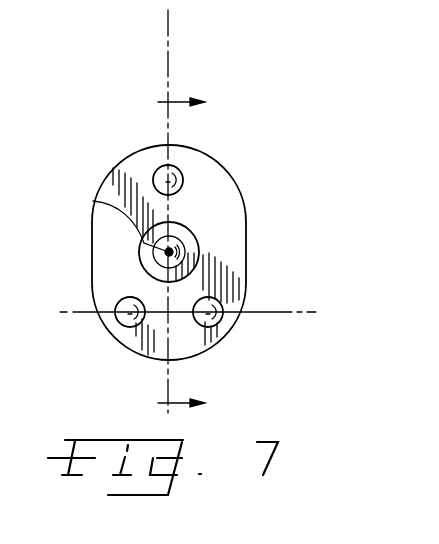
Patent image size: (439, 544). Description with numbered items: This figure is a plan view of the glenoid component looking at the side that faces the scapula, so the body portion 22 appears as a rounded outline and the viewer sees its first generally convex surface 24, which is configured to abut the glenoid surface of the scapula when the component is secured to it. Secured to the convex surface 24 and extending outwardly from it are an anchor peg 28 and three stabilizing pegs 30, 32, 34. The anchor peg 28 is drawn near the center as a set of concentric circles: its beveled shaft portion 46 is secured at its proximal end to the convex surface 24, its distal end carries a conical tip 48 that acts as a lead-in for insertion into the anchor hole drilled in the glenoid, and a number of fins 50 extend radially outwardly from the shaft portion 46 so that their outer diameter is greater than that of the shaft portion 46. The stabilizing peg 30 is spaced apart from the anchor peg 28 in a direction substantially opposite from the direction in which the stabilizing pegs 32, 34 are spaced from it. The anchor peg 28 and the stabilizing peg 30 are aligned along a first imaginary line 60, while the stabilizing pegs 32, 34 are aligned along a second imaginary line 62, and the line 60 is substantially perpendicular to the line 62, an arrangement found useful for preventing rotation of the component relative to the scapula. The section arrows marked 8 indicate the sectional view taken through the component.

The section line 8- 8 is at (192, 254).
The body portion 22 is at (105, 250).
The convex surface 24 is at (236, 270).
The anchor peg 28 is at (203, 233).
The stabilizing peg 30 is at (183, 181).
The stabilizing peg 32 is at (126, 328).
The stabilizing peg 34 is at (216, 325).
The shaft portion 46 is at (185, 224).
The conical tip 48 is at (93, 201).
The fins 50 is at (202, 252).
The first imaginary line 60 is at (170, 30).
The second imaginary line 62 is at (288, 309).